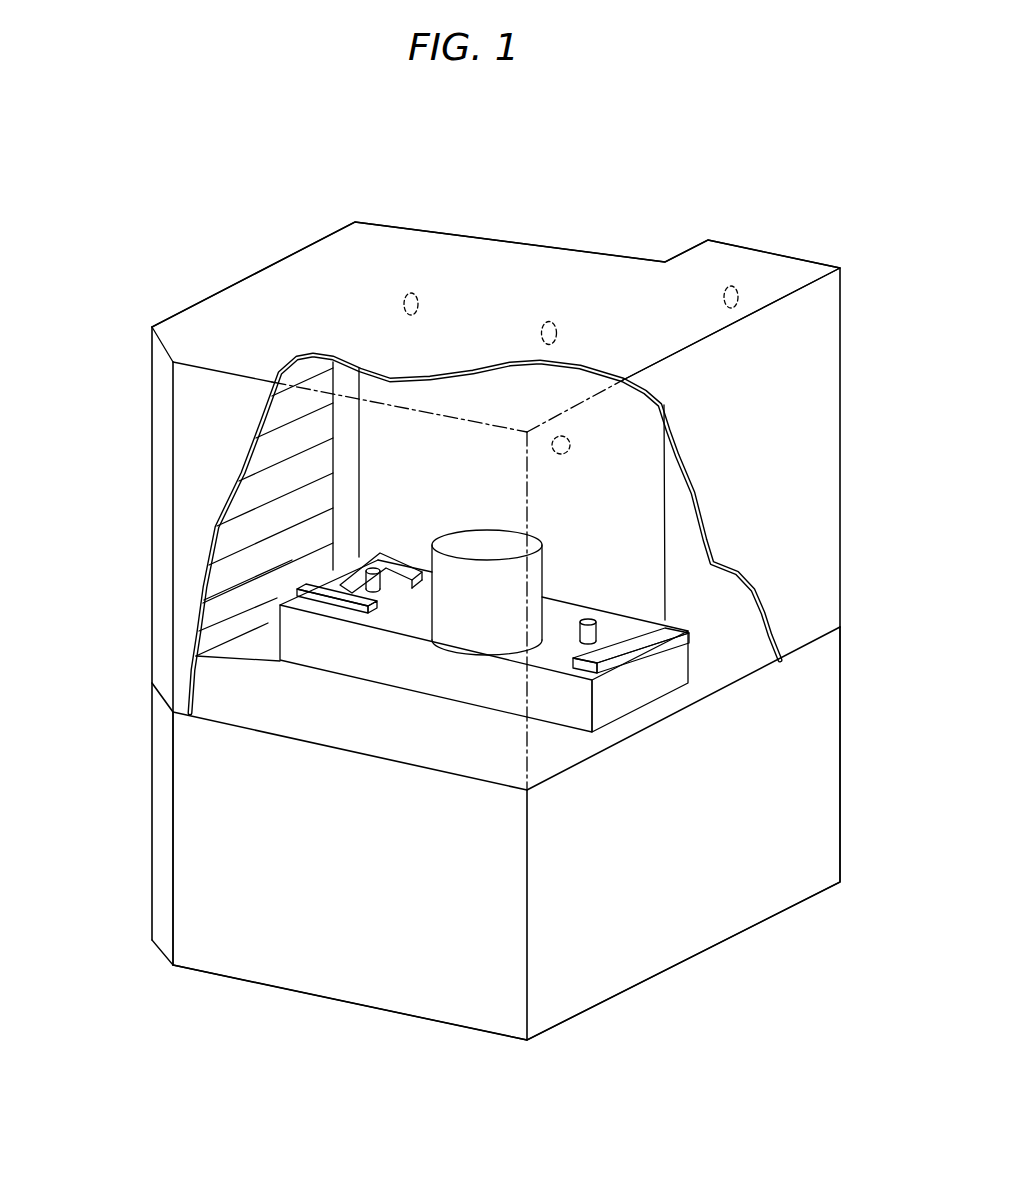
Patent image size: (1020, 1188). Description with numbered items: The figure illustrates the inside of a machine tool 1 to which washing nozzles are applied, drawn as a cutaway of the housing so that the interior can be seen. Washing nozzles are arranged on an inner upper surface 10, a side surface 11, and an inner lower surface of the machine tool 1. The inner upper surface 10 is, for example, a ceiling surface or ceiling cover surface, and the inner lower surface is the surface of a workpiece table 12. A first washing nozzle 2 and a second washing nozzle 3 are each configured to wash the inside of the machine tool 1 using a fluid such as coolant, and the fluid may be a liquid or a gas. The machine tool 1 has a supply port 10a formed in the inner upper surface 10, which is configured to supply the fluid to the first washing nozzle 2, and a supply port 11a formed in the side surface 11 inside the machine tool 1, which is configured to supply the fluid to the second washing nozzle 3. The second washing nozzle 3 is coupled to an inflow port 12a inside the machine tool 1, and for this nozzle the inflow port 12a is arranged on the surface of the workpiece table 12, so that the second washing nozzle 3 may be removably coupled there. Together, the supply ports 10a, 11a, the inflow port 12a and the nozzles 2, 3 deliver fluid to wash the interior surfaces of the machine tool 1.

The machine tool 1 is at (678, 172).
The first washing nozzle 2 is at (418, 293).
The second washing nozzle 3 is at (368, 570).
The inner upper surface 10 is at (462, 383).
The supply port 10a is at (402, 304).
The side surface 11 is at (637, 447).
The supply port 11a is at (570, 433).
The workpiece table 12 is at (325, 590).
The inflow port 12a is at (380, 572).